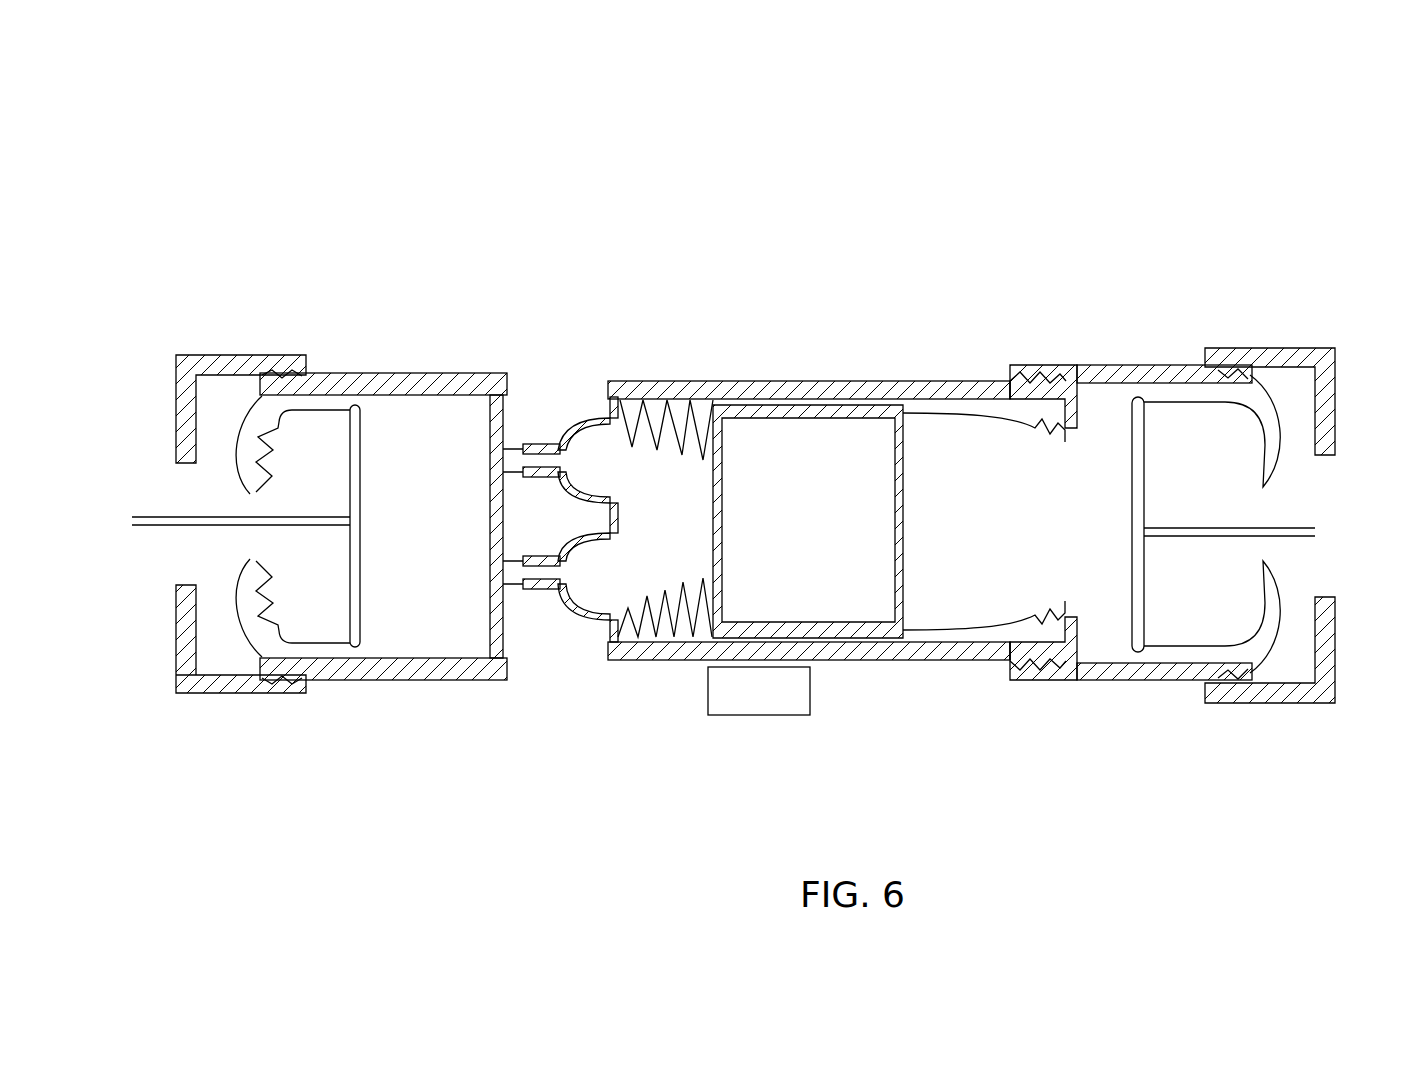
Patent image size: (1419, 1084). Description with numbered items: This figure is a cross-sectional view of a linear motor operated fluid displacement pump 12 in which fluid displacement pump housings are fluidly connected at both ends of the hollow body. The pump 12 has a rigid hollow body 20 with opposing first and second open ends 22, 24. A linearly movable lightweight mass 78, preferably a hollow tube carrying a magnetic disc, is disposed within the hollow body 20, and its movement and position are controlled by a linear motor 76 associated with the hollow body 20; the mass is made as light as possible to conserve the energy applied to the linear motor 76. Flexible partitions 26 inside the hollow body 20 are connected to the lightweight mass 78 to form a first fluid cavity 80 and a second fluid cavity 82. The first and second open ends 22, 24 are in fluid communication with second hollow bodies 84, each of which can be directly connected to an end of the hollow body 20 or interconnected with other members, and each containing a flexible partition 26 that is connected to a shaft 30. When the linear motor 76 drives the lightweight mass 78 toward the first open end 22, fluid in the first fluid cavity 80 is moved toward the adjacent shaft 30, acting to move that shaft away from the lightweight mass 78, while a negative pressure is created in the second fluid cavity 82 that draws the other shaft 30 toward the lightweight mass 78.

The fluid displacement pump 12 is at (490, 268).
The rigid hollow body 20 is at (950, 382).
The first open end 22 is at (606, 405).
The second open end 24 is at (1066, 398).
The flexible partition 26 is at (248, 436).
The shaft 30 is at (150, 515).
The linear motor 76 is at (778, 703).
The lightweight mass 78 is at (765, 440).
The first fluid cavity 80 is at (615, 575).
The second fluid cavity 82 is at (1021, 588).
The second hollow body 84 is at (360, 373).